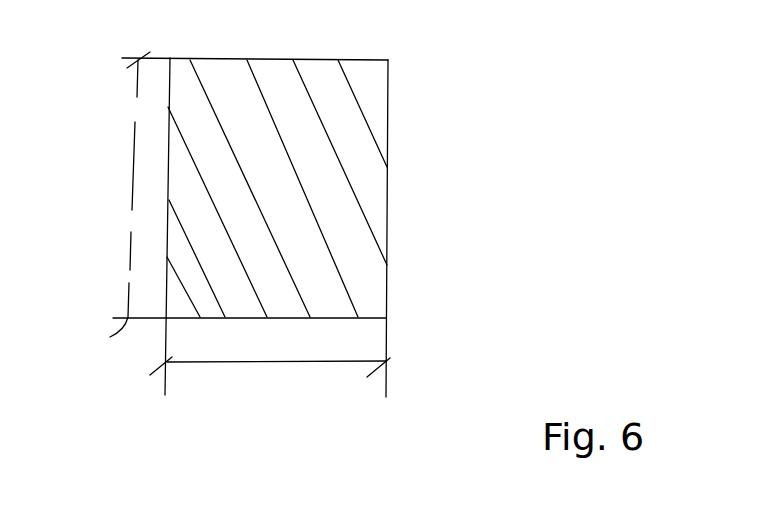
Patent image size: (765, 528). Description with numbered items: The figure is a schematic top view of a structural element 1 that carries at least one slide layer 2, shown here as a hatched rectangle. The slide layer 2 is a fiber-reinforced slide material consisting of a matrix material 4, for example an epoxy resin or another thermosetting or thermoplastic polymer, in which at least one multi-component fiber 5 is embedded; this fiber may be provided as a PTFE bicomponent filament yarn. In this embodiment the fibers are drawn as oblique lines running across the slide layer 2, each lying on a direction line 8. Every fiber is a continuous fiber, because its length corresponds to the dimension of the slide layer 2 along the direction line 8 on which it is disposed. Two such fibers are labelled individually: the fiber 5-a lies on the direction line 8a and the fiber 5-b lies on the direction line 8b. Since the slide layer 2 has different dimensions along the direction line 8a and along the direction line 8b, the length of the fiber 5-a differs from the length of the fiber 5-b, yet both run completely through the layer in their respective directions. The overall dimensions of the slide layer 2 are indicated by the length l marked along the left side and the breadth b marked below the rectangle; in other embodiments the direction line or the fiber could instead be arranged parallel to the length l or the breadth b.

The structural element 1 is at (420, 83).
The slide layer 2 is at (392, 204).
The matrix material 4 is at (278, 90).
The multi-component fiber 5 is at (346, 188).
The direction line 8 is at (497, 267).
The fiber 5-a is at (444, 162).
The fiber 5-b is at (473, 113).
The direction line 8a is at (550, 78).
The direction line 8b is at (540, 135).
The length l is at (130, 158).
The breadth b is at (297, 363).